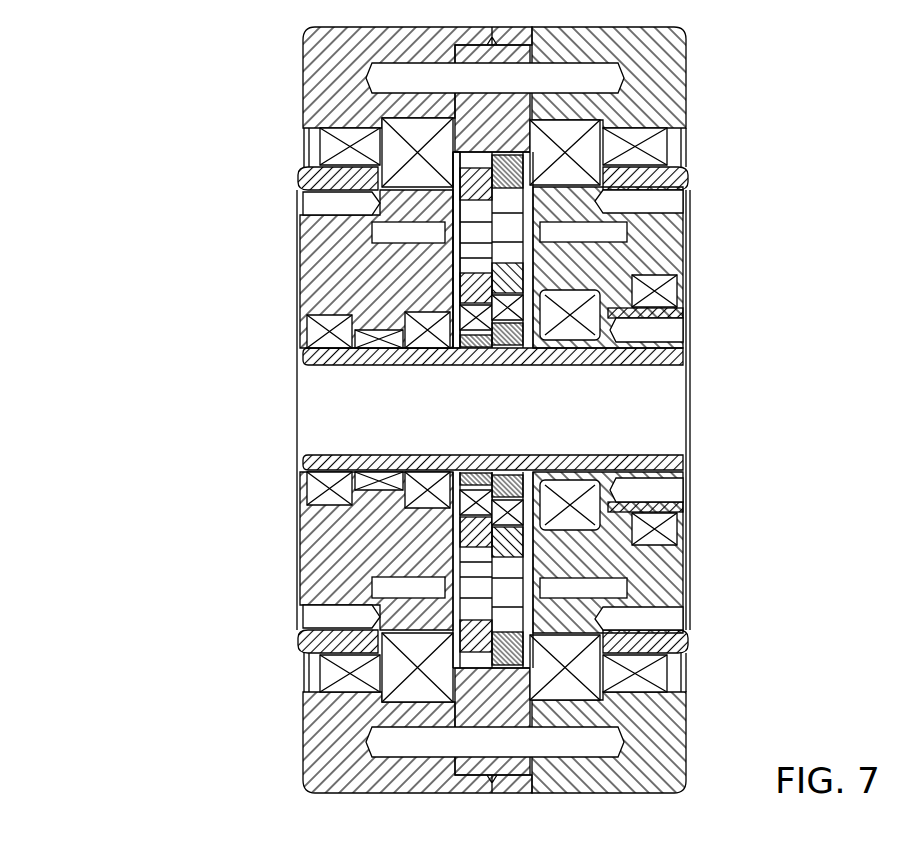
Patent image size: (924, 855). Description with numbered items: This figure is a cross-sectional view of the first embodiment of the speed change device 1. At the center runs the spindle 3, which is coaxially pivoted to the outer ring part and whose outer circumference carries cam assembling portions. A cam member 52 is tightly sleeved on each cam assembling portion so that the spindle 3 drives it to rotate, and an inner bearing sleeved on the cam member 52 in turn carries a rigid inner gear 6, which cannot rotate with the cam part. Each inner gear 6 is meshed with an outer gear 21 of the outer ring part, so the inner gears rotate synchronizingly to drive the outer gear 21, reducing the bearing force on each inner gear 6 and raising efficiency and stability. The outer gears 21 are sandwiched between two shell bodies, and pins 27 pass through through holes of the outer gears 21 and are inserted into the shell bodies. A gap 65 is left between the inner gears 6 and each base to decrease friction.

The speed change device 1 is at (477, 410).
The spindle 3 is at (653, 474).
The inner gear 6 is at (507, 173).
The outer gear 21 is at (470, 111).
The pin 27 is at (378, 80).
The cam member 52 is at (515, 336).
The gap 65 is at (450, 207).